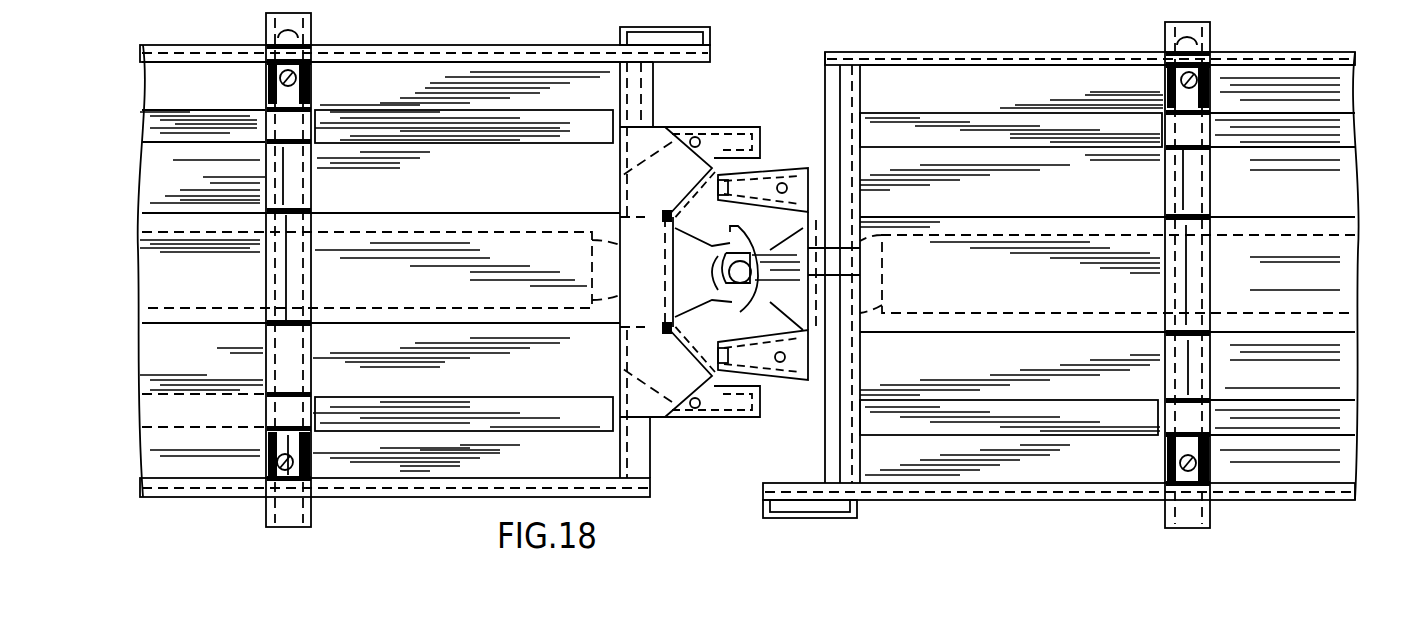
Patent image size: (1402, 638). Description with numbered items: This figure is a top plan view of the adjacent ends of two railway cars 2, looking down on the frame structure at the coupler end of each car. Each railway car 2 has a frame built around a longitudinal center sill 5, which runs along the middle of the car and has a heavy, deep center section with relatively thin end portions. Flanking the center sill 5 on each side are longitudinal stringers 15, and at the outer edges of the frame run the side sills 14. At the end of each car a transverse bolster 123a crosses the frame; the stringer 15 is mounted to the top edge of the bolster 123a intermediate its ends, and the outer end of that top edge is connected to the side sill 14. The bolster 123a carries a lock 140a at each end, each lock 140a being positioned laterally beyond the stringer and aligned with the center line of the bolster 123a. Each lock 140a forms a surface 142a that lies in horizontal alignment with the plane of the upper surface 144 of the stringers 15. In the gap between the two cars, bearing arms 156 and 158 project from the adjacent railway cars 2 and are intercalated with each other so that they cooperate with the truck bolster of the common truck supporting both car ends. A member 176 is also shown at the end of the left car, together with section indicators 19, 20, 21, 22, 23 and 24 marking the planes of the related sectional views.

The railway car 2 is at (566, 50).
The center sill 5 is at (460, 218).
The side sill 14 is at (460, 52).
The longitudinal stringer 15 is at (377, 130).
The section line 19 is at (317, 281).
The section line 20 is at (1197, 255).
The section line 21 is at (1153, 510).
The section line 22 is at (887, 257).
The section line 23 is at (757, 30).
The section line 24 is at (758, 77).
The transverse bolster 123a is at (264, 439).
The lock 140a is at (268, 77).
The surface 142a is at (268, 93).
The upper surface 144 is at (300, 107).
The bearing arm 156 is at (760, 144).
The bearing arm 158 is at (747, 198).
The end column 176 is at (642, 198).